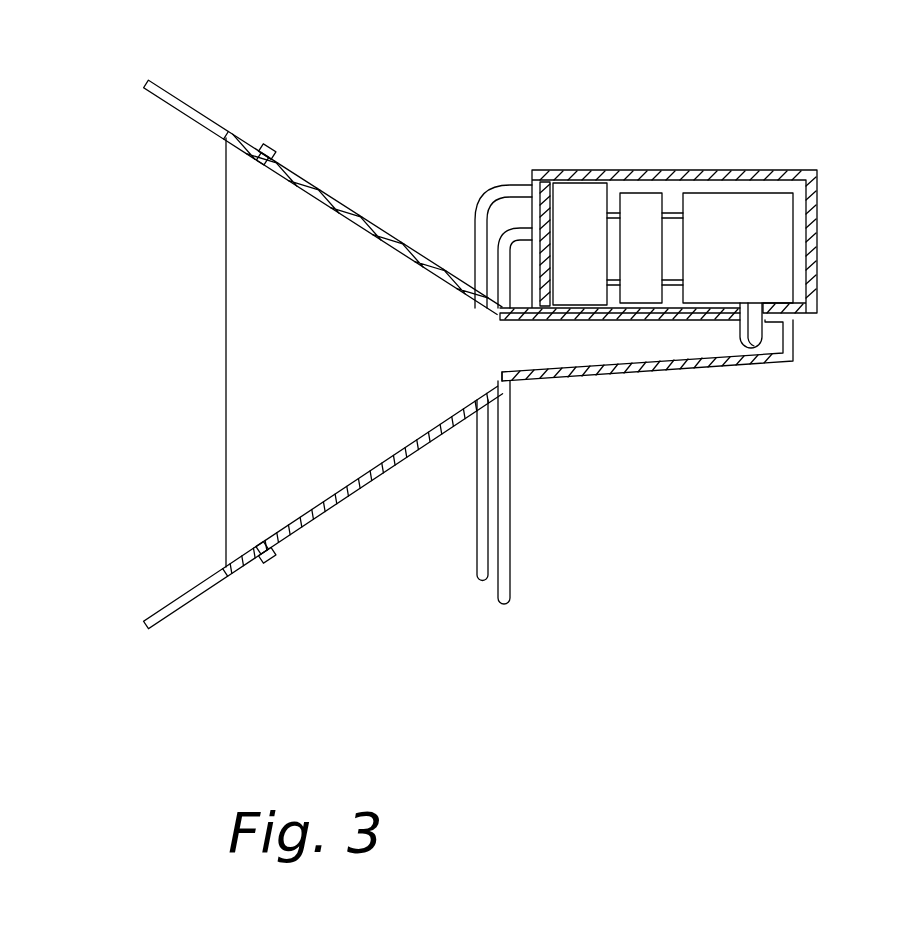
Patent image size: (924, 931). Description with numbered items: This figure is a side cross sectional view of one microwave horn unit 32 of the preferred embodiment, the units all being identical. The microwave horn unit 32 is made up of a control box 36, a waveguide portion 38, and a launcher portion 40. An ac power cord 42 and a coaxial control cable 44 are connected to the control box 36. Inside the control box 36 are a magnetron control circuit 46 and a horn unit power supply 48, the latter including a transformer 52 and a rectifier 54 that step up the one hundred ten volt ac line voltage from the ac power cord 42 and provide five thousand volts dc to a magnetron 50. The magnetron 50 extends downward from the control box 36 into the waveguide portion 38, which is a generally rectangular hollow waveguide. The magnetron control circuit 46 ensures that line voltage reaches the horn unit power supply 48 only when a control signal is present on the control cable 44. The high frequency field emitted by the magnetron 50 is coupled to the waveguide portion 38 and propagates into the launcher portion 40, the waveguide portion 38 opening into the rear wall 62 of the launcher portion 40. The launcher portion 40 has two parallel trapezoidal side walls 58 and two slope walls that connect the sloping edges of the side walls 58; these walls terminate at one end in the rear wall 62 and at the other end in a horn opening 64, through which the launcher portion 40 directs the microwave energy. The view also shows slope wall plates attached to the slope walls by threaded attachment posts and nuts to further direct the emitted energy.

The microwave horn unit 32 is at (682, 214).
The control box 36 is at (780, 170).
The waveguide portion 38 is at (680, 367).
The launcher portion 40 is at (391, 331).
The ac power cord 42 is at (505, 494).
The coaxial control cable 44 is at (478, 497).
The magnetron control circuit 46 is at (605, 268).
The horn unit power supply 48 is at (603, 146).
The magnetron 50 is at (750, 330).
The transformer 52 is at (663, 265).
The rectifier 54 is at (763, 270).
The trapezoidal side walls 58 is at (386, 411).
The rear wall 62 is at (512, 378).
The horn opening 64 is at (256, 388).